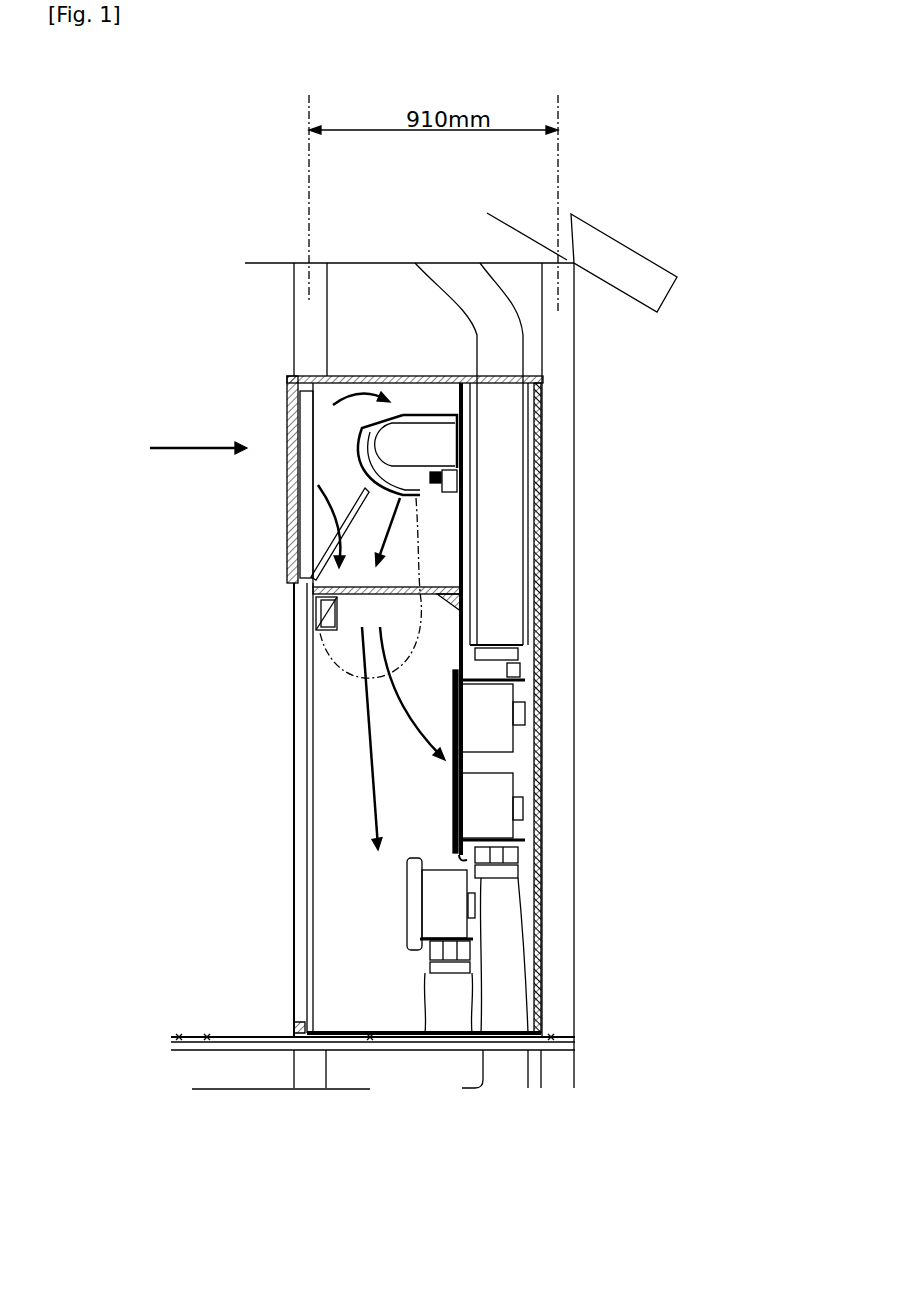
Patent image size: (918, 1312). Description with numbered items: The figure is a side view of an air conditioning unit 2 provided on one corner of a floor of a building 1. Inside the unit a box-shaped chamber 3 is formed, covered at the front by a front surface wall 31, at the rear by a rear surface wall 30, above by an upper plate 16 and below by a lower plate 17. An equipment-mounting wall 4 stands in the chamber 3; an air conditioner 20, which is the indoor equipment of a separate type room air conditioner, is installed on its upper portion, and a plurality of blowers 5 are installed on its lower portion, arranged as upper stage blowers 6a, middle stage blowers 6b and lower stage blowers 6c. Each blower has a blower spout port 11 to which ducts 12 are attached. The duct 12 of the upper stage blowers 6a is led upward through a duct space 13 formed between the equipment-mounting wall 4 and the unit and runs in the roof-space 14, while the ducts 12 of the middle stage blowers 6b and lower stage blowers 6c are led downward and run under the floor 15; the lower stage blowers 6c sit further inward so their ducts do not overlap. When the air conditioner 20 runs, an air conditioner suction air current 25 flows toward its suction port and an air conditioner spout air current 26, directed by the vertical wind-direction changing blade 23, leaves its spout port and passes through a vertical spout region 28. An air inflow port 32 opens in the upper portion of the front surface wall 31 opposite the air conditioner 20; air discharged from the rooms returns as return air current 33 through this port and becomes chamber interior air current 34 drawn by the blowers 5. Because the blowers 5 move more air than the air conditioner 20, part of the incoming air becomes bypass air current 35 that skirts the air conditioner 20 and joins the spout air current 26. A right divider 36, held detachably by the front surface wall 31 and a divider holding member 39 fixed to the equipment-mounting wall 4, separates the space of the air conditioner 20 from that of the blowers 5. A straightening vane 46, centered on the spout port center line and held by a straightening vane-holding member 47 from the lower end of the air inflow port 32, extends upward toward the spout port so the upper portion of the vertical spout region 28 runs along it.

The building 1 is at (592, 230).
The air conditioning unit 2 is at (470, 545).
The chamber 3 is at (336, 744).
The equipment-mounting wall 4 is at (470, 640).
The blowers 5 is at (604, 763).
The upper stage blowers 6a is at (515, 712).
The middle stage blowers 6b is at (515, 775).
The lower stage blowers 6c is at (583, 824).
The blower spout port 11 is at (440, 877).
The ducts 12 is at (495, 398).
The duct space 13 is at (522, 425).
The roof-space 14 is at (382, 315).
The floor 15 is at (422, 1072).
The upper plate 16 is at (368, 372).
The lower plate 17 is at (355, 1028).
The air conditioner 20 is at (355, 428).
The vertical wind-direction changing blade 23 is at (525, 462).
The air conditioner suction air current 25 is at (288, 376).
The air conditioner spout air current 26 is at (325, 605).
The vertical spout region 28 is at (336, 672).
The rear surface wall 30 is at (537, 960).
The front surface wall 31 is at (304, 873).
The air inflow port 32 is at (300, 517).
The return air current 33 is at (210, 452).
The chamber interior air current 34 is at (423, 733).
The bypass air current 35 is at (313, 545).
The right divider 36 is at (462, 565).
The divider holding member 39 is at (470, 585).
The straightening vane 46 is at (350, 488).
The straightening vane-holding member 47 is at (318, 628).